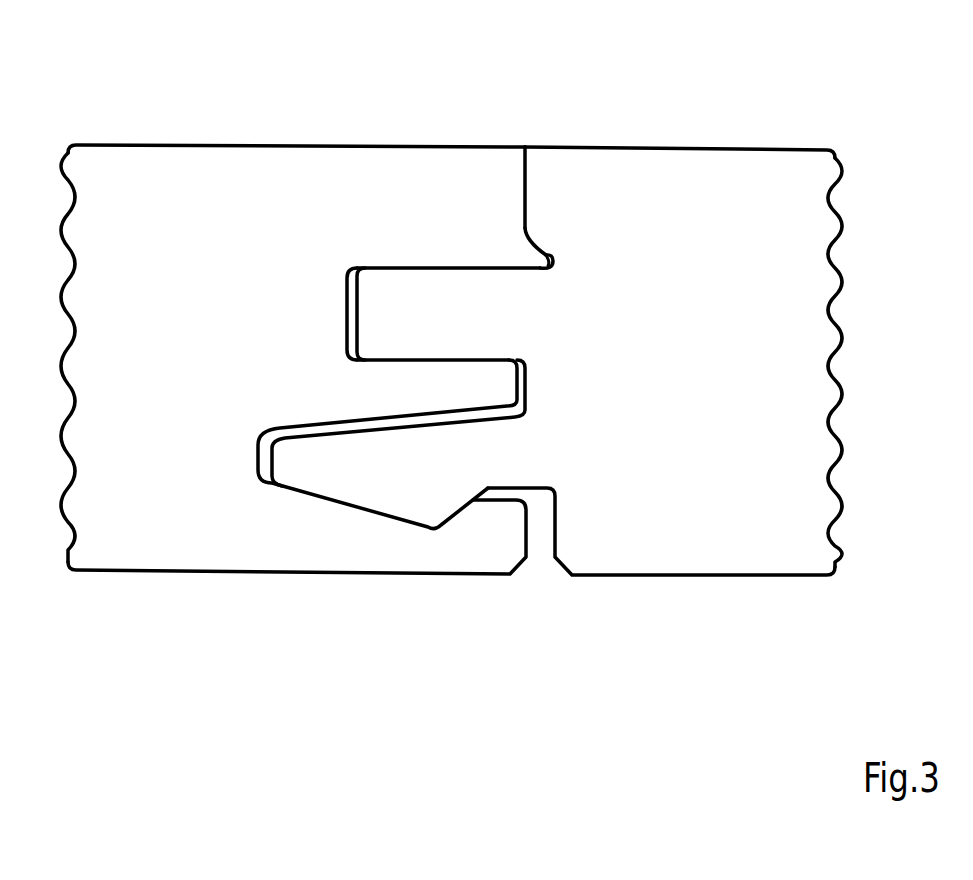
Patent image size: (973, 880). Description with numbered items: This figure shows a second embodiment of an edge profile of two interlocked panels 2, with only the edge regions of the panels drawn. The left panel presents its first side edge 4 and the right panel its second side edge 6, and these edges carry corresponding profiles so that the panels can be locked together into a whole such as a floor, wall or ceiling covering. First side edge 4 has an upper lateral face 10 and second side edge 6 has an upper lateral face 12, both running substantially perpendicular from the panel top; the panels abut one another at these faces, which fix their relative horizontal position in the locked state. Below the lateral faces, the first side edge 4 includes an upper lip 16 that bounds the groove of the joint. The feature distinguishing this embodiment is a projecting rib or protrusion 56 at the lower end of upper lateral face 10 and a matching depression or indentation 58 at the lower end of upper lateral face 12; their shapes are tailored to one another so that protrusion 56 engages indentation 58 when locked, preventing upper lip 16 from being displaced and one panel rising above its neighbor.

The panel 2 is at (230, 172).
The first side edge 4 is at (525, 146).
The second side edge 6 is at (661, 354).
The upper lateral face 10 is at (527, 172).
The upper lateral face 12 is at (527, 182).
The upper lip 16 is at (423, 210).
The protrusion 56 is at (538, 251).
The indentation 58 is at (555, 257).